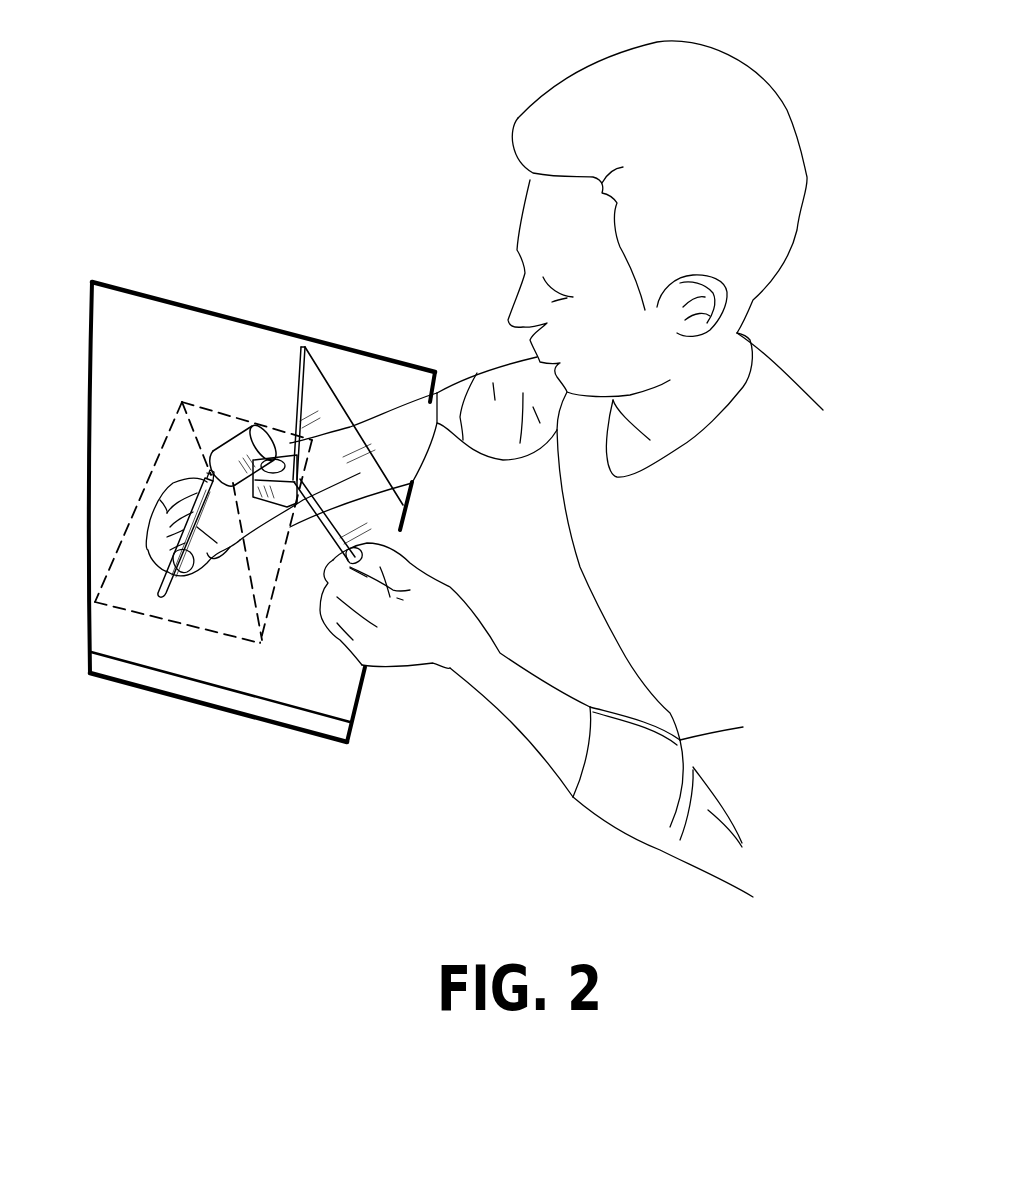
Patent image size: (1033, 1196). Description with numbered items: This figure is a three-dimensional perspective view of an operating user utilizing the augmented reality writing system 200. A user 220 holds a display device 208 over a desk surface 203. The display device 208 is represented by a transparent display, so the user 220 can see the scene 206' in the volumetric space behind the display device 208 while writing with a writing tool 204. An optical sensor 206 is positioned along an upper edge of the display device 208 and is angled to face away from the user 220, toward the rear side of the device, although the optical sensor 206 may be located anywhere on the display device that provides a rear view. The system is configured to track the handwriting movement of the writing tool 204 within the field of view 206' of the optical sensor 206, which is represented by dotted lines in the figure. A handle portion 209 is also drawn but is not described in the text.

The augmented reality writing system 200 is at (152, 62).
The desk surface 203 is at (130, 340).
The writing tool 204 is at (166, 589).
The optical sensor 206 is at (253, 445).
The field of view 206' is at (203, 522).
The display device 208 is at (338, 398).
The handle 209 is at (392, 533).
The user 220 is at (800, 388).